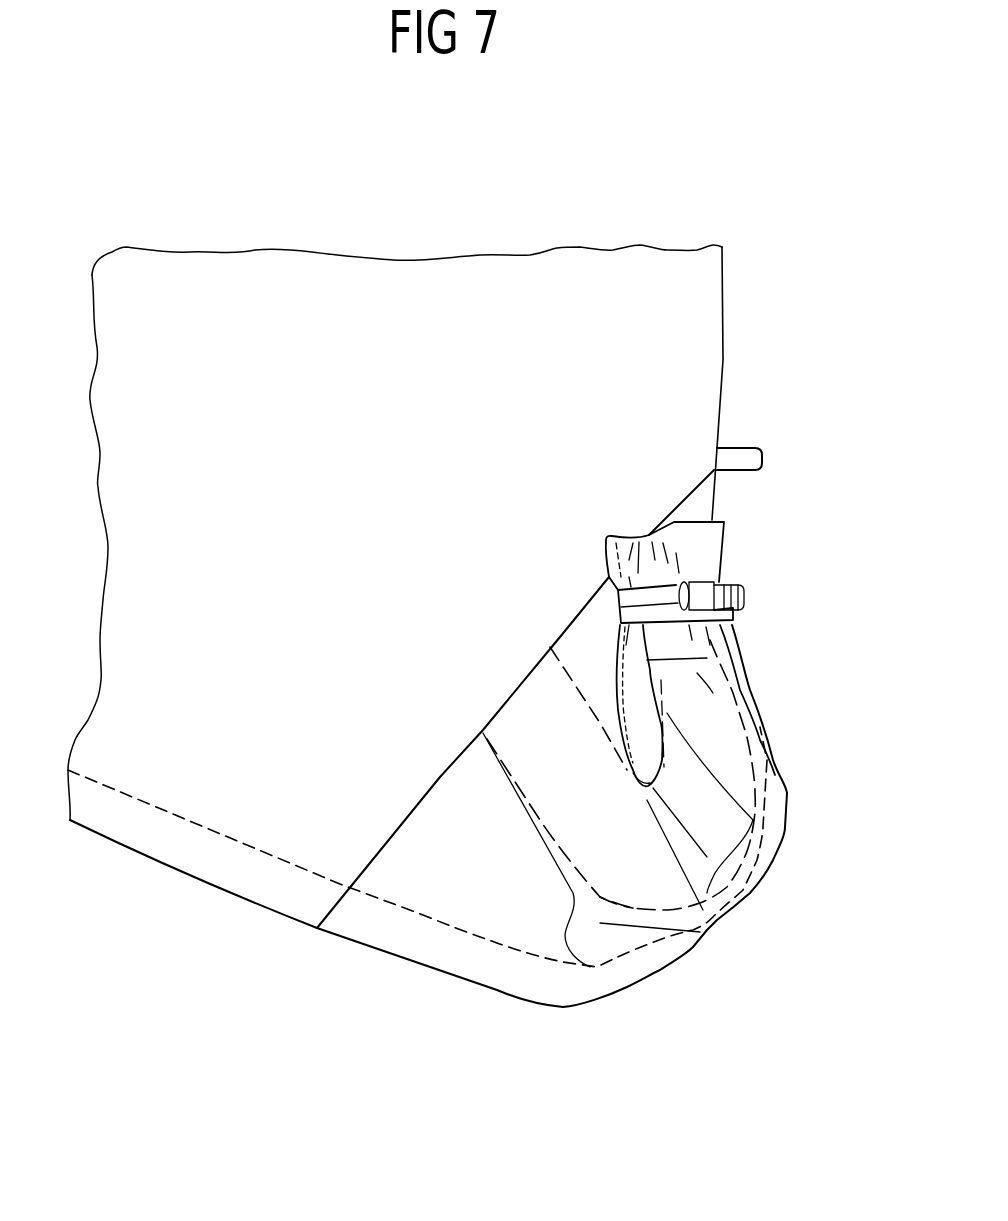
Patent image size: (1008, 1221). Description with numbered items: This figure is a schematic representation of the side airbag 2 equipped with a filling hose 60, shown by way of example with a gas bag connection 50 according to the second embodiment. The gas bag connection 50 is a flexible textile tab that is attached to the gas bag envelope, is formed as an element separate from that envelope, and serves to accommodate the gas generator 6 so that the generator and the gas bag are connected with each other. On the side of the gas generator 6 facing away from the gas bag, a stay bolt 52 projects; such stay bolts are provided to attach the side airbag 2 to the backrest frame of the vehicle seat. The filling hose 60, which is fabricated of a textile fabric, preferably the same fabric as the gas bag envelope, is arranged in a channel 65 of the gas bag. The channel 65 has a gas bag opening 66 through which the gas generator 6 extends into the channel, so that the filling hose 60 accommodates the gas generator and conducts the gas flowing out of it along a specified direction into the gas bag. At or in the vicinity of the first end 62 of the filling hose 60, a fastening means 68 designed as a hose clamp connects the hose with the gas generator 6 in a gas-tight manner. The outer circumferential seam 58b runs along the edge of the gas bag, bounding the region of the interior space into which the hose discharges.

The side airbag 2 is at (275, 215).
The gas bag connection 50 is at (604, 396).
The stay bolts 52 is at (748, 455).
The gas generator 6 is at (707, 490).
The gas bag opening 66 is at (620, 533).
The first end 62 is at (697, 513).
The fastening means 68 is at (668, 598).
The channel 65 is at (747, 675).
The outer circumferential seam 58b is at (418, 913).
The filling hose 60 is at (642, 907).